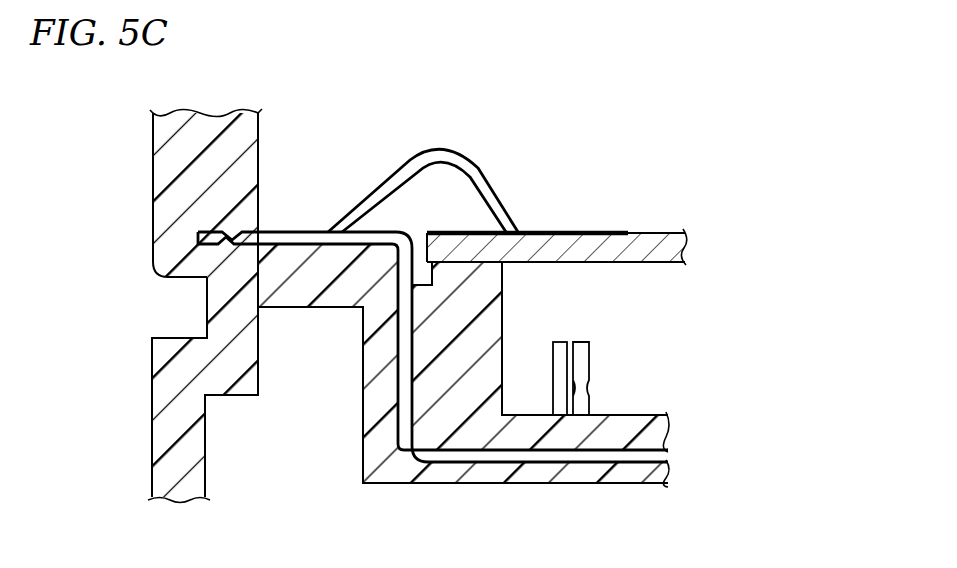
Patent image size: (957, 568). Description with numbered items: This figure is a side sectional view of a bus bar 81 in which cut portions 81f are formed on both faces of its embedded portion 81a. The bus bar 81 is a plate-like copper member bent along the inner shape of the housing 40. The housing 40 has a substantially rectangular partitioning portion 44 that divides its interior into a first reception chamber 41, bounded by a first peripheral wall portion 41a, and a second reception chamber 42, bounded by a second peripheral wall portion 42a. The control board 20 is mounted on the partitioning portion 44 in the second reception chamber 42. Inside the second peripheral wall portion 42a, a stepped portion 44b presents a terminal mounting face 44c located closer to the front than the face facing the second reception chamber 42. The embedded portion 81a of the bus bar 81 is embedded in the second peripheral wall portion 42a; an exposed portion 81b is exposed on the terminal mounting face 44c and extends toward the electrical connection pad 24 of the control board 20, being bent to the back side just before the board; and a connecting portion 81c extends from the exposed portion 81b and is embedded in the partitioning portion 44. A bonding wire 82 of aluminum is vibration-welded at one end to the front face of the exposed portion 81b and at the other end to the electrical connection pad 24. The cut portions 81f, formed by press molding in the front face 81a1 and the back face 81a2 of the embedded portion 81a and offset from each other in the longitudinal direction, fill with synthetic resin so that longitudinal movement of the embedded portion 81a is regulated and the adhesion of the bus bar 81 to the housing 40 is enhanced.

The control board 20 is at (557, 212).
The electrical connection pad 24 is at (540, 232).
The housing 40 is at (167, 306).
The first reception chamber 41 is at (622, 532).
The first peripheral wall portion 41a is at (160, 447).
The second reception chamber 42 is at (557, 196).
The second peripheral wall portion 42a is at (163, 157).
The partitioning portion 44 is at (463, 359).
The stepped portion 44b is at (305, 290).
The terminal mounting face 44c is at (300, 232).
The bus bar 81 is at (369, 263).
The embedded portion 81a is at (166, 228).
The front face 81a1 is at (208, 232).
The back face 81a2 is at (248, 250).
The exposed portion 81b is at (320, 232).
The connecting portion 81c is at (405, 360).
The cut portion 81f is at (236, 232).
The bonding wire 82 is at (446, 153).